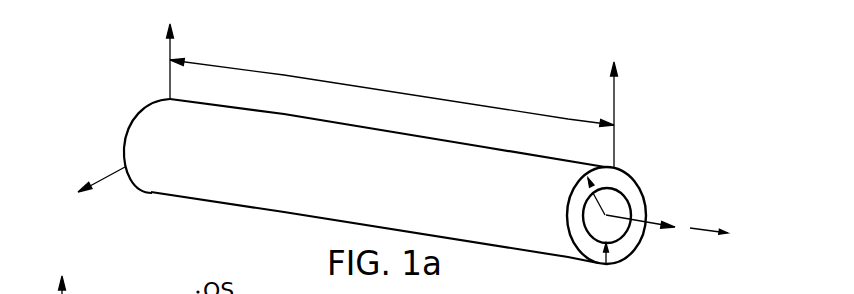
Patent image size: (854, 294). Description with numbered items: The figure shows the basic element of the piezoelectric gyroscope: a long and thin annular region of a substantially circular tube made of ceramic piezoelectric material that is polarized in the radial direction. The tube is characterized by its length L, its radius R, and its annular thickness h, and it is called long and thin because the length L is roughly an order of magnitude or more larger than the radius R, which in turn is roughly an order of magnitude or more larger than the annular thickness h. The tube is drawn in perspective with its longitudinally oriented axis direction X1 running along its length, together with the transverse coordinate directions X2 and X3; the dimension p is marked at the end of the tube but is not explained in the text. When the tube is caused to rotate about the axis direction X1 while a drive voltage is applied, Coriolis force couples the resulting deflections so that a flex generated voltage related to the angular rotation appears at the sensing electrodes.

The length L is at (394, 113).
The radius R is at (622, 203).
The annular thickness h is at (652, 191).
The radial gap / wall dimension p is at (607, 266).
The axis direction X1 is at (654, 242).
The transverse coordinate axis X2 is at (115, 159).
The transverse coordinate axis X3 is at (90, 194).